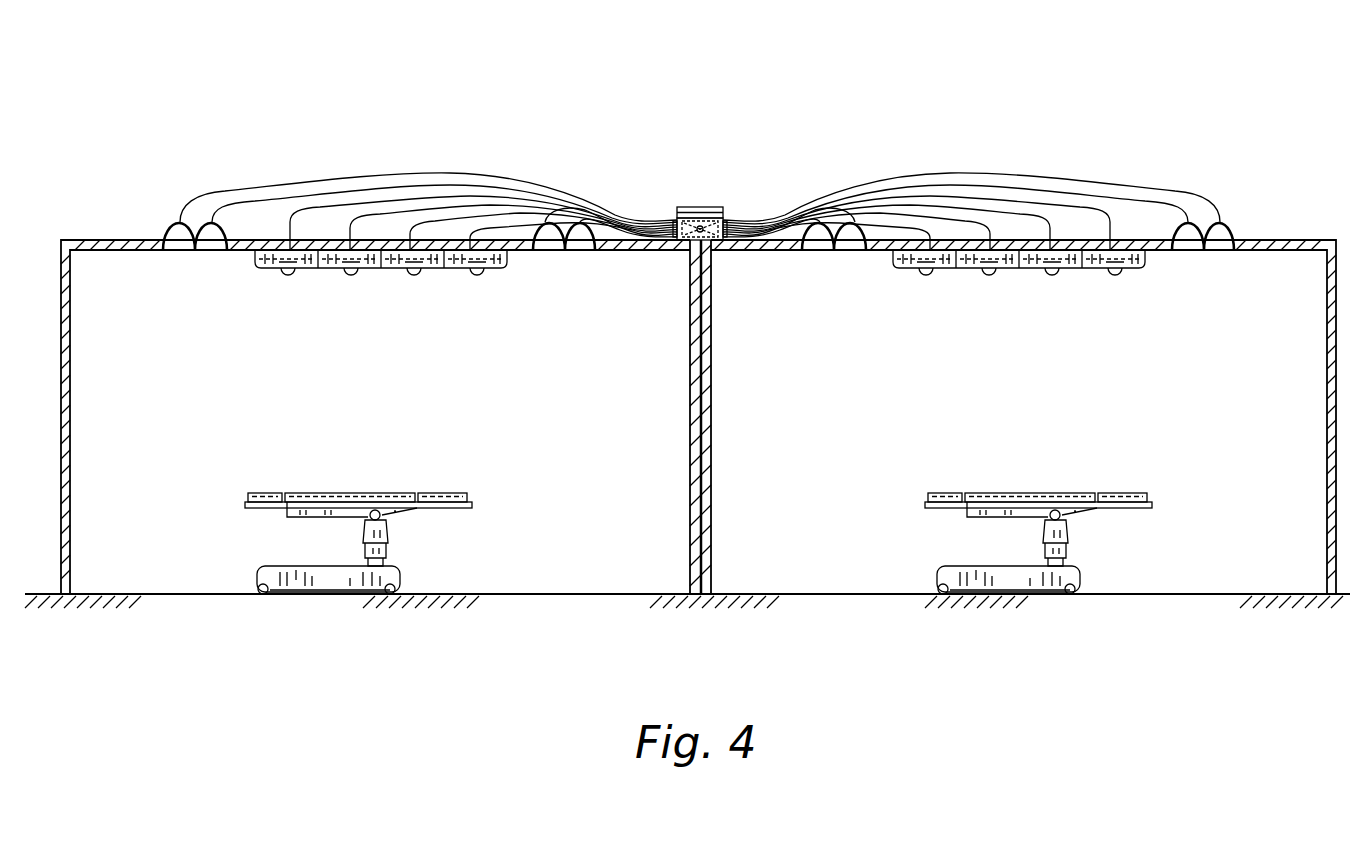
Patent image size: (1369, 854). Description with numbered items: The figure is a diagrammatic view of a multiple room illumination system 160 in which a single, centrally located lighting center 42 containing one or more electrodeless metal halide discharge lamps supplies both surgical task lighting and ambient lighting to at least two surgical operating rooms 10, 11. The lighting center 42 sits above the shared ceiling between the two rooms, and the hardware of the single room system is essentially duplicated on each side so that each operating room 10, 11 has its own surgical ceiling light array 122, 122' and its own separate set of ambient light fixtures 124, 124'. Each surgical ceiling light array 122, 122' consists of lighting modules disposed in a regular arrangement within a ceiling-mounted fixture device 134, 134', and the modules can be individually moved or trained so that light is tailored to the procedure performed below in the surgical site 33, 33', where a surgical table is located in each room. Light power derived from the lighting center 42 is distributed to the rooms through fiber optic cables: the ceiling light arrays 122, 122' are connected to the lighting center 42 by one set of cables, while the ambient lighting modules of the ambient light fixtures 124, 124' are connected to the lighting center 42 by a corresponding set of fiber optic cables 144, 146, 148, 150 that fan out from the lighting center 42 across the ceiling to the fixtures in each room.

The surgical operating room 10 is at (198, 413).
The surgical operating room 11 is at (838, 413).
The surgical site 33 is at (433, 500).
The surgical site 33' is at (1108, 500).
The lighting center 42 is at (686, 197).
The surgical ceiling light array 122 is at (381, 325).
The surgical ceiling light array 122' is at (1019, 325).
The ambient light fixtures 124 is at (375, 290).
The ambient light fixtures 124' is at (1014, 290).
The ceiling-mounted fixture device 134 is at (458, 316).
The ceiling-mounted fixture device 134' is at (1097, 316).
The fiber optic cable 144 is at (222, 191).
The fiber optic cable 146 is at (333, 191).
The fiber optic cable 148 is at (1072, 192).
The fiber optic cable 150 is at (1173, 192).
The multiple room illumination system 160 is at (699, 142).